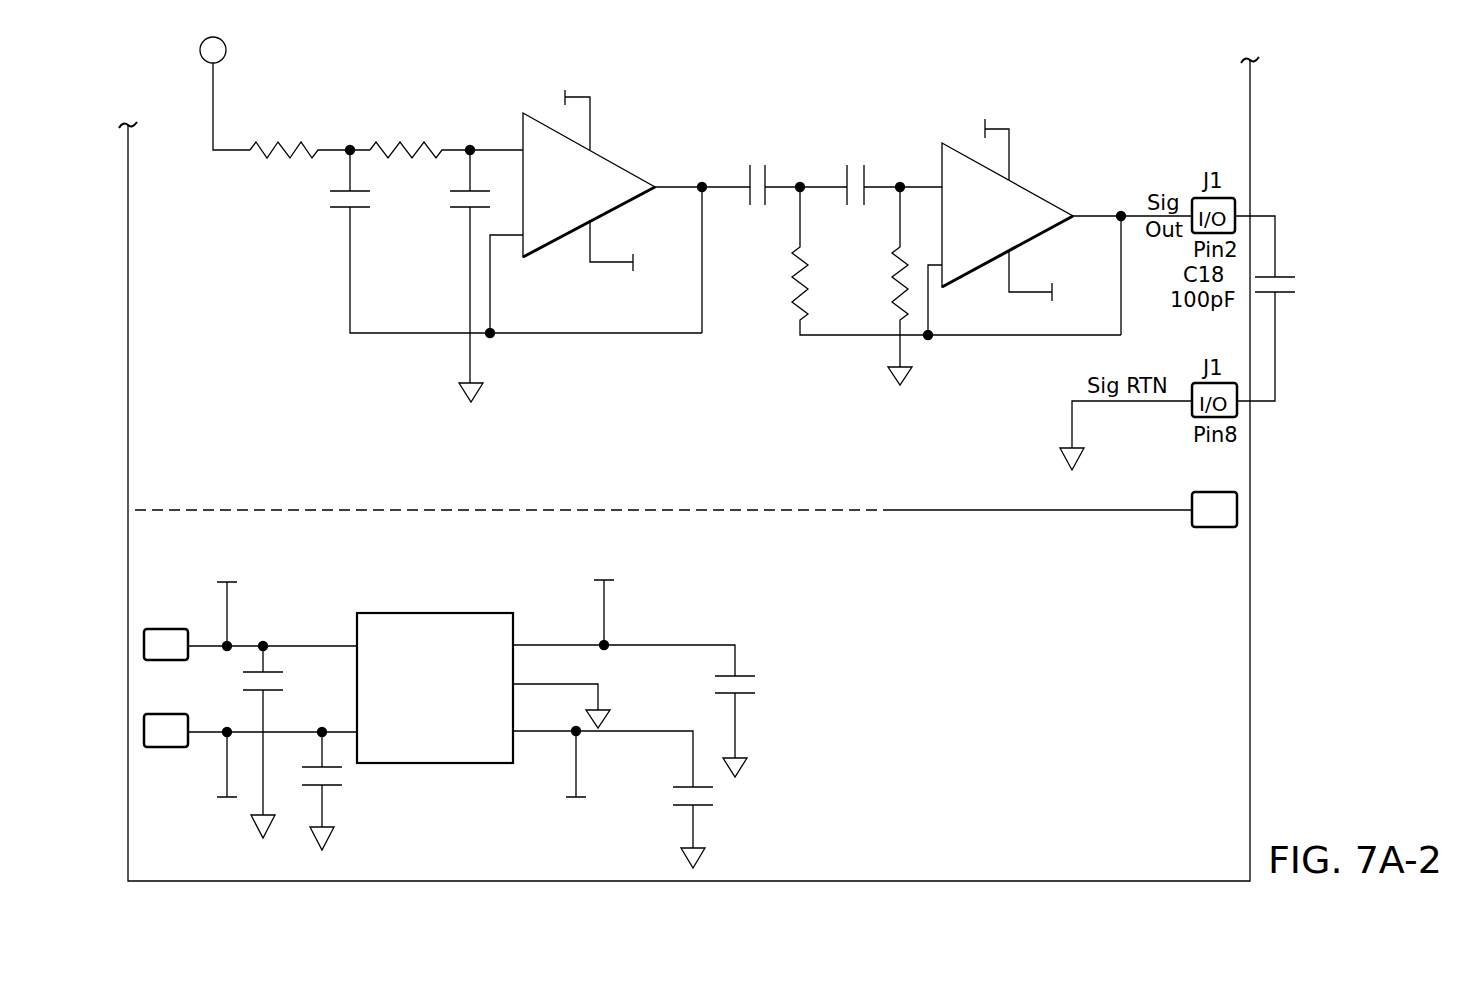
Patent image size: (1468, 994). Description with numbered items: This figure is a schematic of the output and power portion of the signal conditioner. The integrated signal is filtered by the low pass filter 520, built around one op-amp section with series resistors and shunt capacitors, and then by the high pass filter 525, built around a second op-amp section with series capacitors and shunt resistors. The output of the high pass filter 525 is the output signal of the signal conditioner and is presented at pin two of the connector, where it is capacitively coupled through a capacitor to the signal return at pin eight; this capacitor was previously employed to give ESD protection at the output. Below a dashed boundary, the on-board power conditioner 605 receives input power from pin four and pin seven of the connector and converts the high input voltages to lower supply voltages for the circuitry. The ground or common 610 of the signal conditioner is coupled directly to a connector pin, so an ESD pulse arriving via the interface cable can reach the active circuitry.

The low pass filter 520 is at (453, 251).
The high pass filter 525 is at (947, 273).
The power conditioner 605 is at (436, 567).
The ground 610 is at (1133, 509).